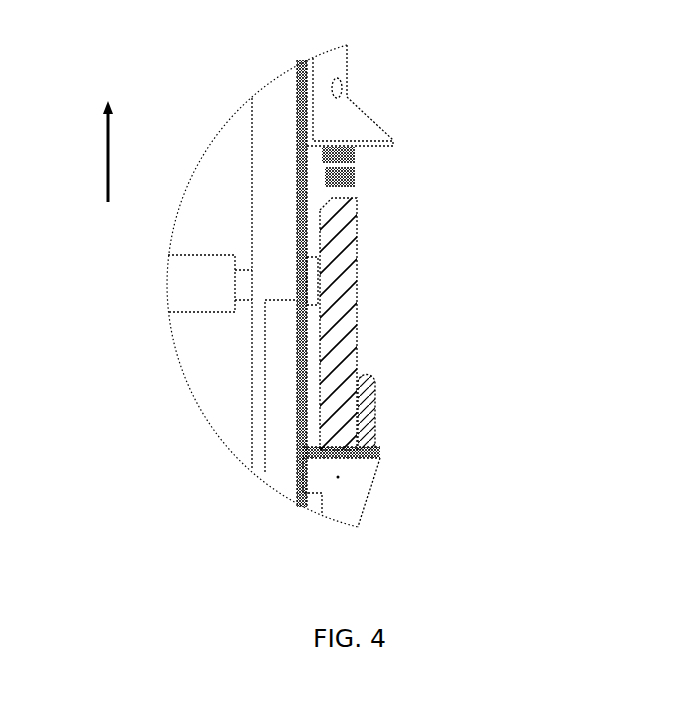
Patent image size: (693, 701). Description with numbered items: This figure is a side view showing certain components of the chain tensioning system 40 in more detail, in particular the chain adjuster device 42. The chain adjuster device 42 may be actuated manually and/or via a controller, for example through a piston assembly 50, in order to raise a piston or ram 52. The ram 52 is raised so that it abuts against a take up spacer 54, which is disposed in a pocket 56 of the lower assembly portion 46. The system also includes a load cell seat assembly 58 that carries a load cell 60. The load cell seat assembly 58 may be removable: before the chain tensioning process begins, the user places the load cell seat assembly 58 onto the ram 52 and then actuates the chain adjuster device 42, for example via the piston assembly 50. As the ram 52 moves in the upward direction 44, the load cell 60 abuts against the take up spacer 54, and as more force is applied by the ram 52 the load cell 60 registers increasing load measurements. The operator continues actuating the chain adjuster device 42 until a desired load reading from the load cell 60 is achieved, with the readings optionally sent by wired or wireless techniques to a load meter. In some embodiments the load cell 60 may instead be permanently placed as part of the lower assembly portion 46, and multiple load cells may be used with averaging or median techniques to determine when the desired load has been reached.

The chain tensioning system 40 is at (513, 170).
The chain adjuster device 42 is at (357, 272).
The upward direction 44 is at (108, 152).
The lower assembly portion 46 is at (342, 133).
The piston assembly 50 is at (372, 420).
The ram 52 is at (340, 192).
The take up spacer 54 is at (360, 153).
The pocket 56 is at (362, 152).
The load cell seat assembly 58 is at (362, 182).
The load cell 60 is at (357, 167).